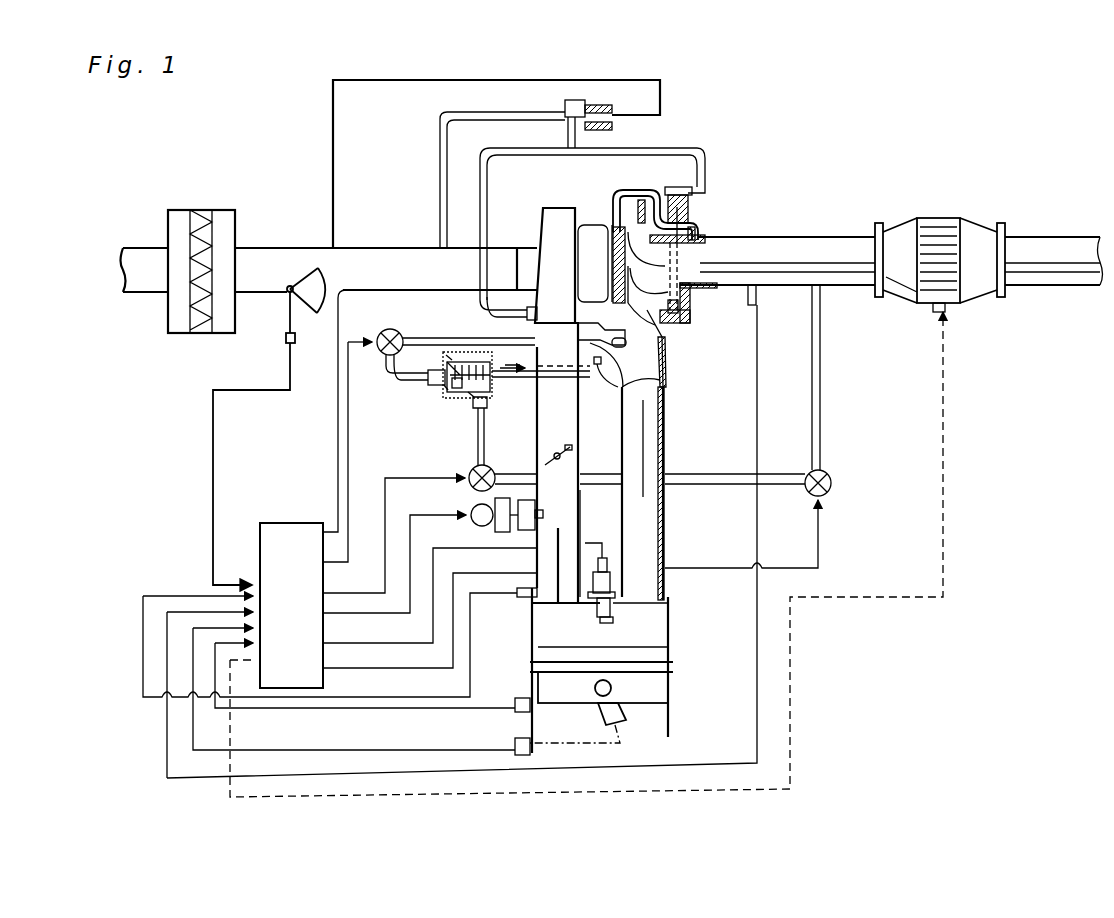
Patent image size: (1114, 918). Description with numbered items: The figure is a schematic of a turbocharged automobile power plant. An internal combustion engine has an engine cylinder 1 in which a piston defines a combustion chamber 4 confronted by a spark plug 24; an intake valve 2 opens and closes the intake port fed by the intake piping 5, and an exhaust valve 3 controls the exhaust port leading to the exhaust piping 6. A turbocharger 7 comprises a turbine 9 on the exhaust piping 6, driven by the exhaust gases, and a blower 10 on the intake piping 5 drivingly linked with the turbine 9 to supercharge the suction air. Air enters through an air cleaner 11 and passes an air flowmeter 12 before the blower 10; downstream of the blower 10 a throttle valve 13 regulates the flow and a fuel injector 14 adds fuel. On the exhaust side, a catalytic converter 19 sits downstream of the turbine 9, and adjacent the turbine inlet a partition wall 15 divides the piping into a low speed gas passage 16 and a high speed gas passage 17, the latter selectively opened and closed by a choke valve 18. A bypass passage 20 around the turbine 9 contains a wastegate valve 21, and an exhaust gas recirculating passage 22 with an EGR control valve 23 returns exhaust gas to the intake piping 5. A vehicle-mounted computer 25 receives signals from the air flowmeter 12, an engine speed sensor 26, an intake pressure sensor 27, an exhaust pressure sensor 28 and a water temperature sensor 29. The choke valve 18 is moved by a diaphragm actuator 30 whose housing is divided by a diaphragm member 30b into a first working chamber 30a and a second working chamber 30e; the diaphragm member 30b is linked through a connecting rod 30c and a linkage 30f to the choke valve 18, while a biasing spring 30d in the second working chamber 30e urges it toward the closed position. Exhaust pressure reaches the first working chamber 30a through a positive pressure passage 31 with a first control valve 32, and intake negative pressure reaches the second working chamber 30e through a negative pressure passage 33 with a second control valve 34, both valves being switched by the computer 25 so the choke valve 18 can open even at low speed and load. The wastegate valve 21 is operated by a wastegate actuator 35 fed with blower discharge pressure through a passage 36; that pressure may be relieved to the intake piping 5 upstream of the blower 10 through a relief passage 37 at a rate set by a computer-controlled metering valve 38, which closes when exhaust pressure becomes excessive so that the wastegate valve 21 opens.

The engine cylinder 1 is at (684, 690).
The intake valve 2 is at (566, 538).
The exhaust valve 3 is at (668, 615).
The combustion chamber 4 is at (587, 646).
The intake piping 5 is at (382, 248).
The exhaust piping 6 is at (830, 237).
The turbocharger 7 is at (595, 222).
The turbine 9 is at (648, 188).
The blower 10 is at (546, 205).
The air cleaner 11 is at (170, 210).
The air flowmeter 12 is at (278, 318).
The throttle valve 13 is at (572, 463).
The fuel injector 14 is at (466, 510).
The partition wall 15 is at (665, 350).
The low speed gas passage 16 is at (668, 337).
The high speed gas passage 17 is at (614, 316).
The choke valve 18 is at (663, 383).
The catalytic converter 19 is at (945, 218).
The bypass passage 20 is at (690, 292).
The wastegate valve 21 is at (690, 318).
The exhaust gas recirculating passage 22 is at (820, 385).
The EGR control valve 23 is at (833, 483).
The spark plug 24 is at (613, 620).
The computer 25 is at (287, 523).
The engine speed sensor 26 is at (515, 745).
The intake pressure sensor 27 is at (517, 597).
The exhaust pressure sensor 28 is at (757, 305).
The temperature sensor 29 is at (515, 702).
The diaphragm actuator 30 is at (440, 392).
The first working chamber 30a is at (447, 390).
The diaphragm member 30b is at (447, 354).
The connecting rod 30c is at (510, 378).
The biasing spring 30d is at (483, 412).
The second working chamber 30e is at (470, 398).
The linkage 30f is at (597, 365).
The positive pressure passage 31 is at (440, 338).
The first control valve 32 is at (384, 331).
The negative pressure passage 33 is at (476, 450).
The second control valve 34 is at (455, 476).
The wastegate actuator 35 is at (693, 207).
The passage 36 is at (677, 148).
The relief passage 37 is at (438, 125).
The metering valve 38 is at (600, 105).